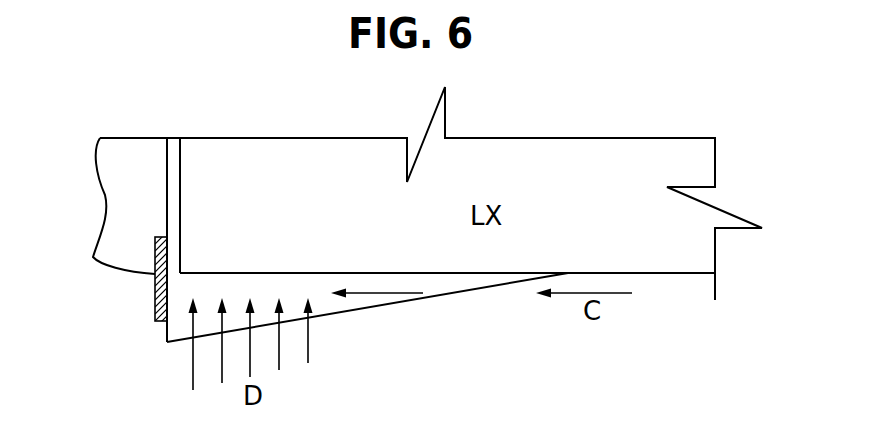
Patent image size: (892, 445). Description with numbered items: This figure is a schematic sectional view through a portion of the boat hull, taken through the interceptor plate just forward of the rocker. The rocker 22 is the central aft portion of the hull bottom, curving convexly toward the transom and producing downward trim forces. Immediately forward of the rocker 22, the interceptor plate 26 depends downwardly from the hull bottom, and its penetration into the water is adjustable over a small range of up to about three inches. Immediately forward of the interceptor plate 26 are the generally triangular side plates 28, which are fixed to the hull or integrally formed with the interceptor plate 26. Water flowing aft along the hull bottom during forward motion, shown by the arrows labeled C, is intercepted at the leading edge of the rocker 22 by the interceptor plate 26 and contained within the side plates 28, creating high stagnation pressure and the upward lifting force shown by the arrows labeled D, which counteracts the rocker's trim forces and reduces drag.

The rocker 22 is at (114, 268).
The interceptor plate 26 is at (155, 297).
The side plates 28 is at (240, 282).